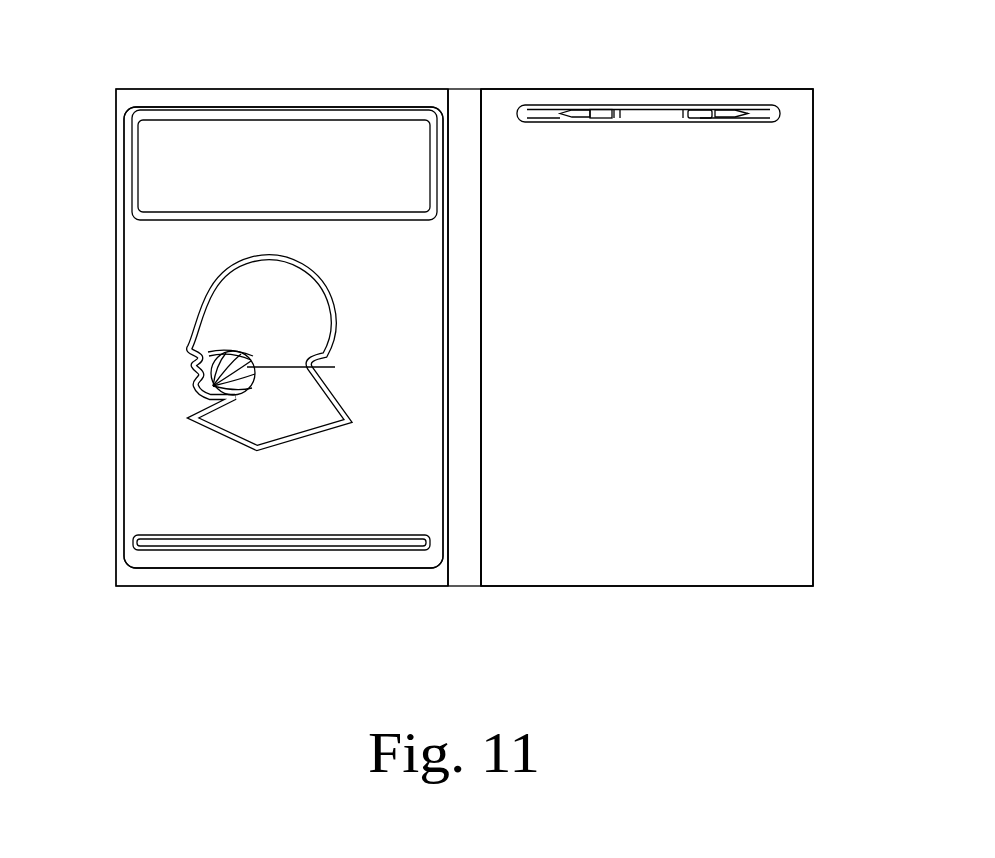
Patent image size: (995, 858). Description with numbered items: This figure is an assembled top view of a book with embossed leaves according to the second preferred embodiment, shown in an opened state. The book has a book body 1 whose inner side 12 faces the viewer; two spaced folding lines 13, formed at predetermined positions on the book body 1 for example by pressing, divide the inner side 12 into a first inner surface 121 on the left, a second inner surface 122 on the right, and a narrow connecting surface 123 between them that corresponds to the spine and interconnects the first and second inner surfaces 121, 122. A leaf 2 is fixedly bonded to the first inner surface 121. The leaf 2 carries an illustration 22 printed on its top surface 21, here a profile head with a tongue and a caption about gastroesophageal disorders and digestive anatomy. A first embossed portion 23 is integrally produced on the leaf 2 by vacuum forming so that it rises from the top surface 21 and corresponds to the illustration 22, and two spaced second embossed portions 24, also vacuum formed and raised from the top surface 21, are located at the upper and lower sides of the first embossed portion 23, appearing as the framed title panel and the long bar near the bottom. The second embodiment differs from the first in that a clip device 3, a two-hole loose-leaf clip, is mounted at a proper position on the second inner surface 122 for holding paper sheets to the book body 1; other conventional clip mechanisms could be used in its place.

The book body 1 is at (145, 605).
The first inner surface 121 is at (248, 98).
The second inner surface 122 is at (742, 222).
The connecting surface 123 is at (465, 110).
The inner side 12 is at (760, 395).
The folding lines 13 is at (448, 557).
The leaf 2 is at (162, 437).
The top surface 21 is at (413, 253).
The illustration 22 is at (248, 317).
The first embossed portion 23 is at (205, 283).
The second embossed portions 24 is at (143, 180).
The clip device 3 is at (648, 110).